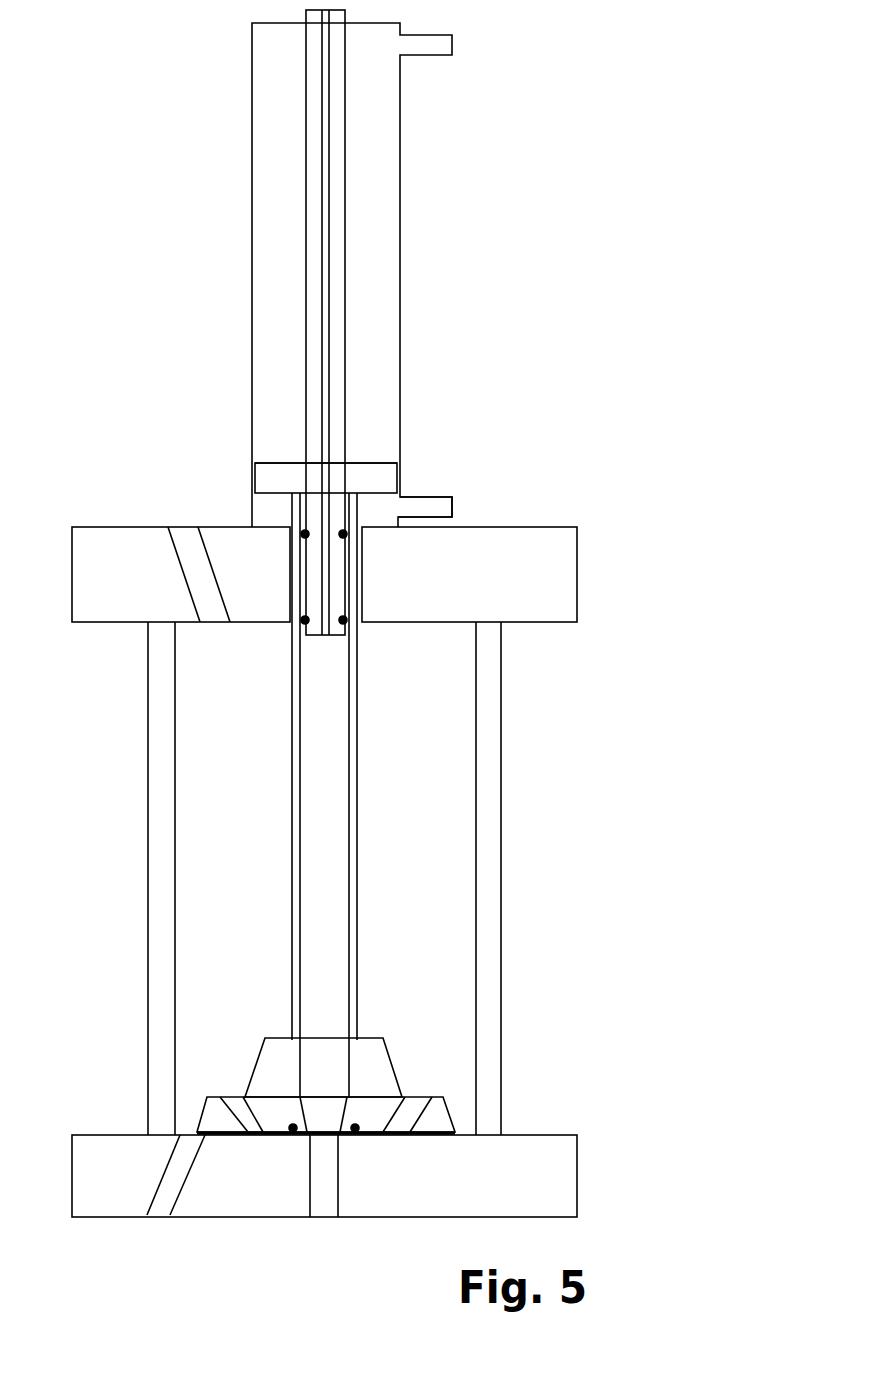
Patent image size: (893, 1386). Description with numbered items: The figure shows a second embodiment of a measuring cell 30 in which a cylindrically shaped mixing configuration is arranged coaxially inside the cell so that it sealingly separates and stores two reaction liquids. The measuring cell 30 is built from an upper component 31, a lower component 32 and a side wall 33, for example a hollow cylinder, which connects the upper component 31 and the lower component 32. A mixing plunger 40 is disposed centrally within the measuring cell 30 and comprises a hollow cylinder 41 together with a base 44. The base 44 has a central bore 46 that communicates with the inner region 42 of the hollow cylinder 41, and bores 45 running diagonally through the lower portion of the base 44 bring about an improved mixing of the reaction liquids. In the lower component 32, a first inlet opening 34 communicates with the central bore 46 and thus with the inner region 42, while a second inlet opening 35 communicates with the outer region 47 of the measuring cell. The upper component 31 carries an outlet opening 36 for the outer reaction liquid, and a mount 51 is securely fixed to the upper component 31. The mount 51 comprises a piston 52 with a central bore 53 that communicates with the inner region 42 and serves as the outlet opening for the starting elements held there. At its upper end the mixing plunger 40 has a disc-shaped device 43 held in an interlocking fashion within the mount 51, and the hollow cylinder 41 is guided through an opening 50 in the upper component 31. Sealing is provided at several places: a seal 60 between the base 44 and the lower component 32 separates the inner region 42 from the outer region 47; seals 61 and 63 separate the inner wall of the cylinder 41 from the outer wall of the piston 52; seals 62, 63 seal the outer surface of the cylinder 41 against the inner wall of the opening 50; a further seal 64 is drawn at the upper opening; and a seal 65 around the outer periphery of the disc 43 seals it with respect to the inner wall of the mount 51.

The measuring cell 30 is at (411, 628).
The upper component 31 is at (567, 562).
The lower component 32 is at (577, 1190).
The side wall 33 is at (501, 975).
The first inlet opening 34 is at (328, 1205).
The second inlet opening 35 is at (170, 1205).
The outlet opening 36 is at (187, 535).
The mixing plunger 40 is at (372, 690).
The hollow cylinder 41 is at (357, 794).
The inner region 42 is at (337, 852).
The disc-shaped device 43 is at (368, 463).
The base 44 is at (400, 1085).
The bores 45 is at (410, 1112).
The central bore 46 is at (305, 1065).
The outer region 47 is at (412, 1000).
The opening 50 is at (358, 517).
The mount 51 is at (400, 270).
The piston 52 is at (345, 17).
The central bore 53 is at (329, 183).
The seal 60 is at (363, 1135).
The seal 61 is at (305, 622).
The seal 62 is at (293, 623).
The seal 63 is at (305, 534).
The upper seal 64 is at (293, 540).
The seal 65 is at (253, 480).